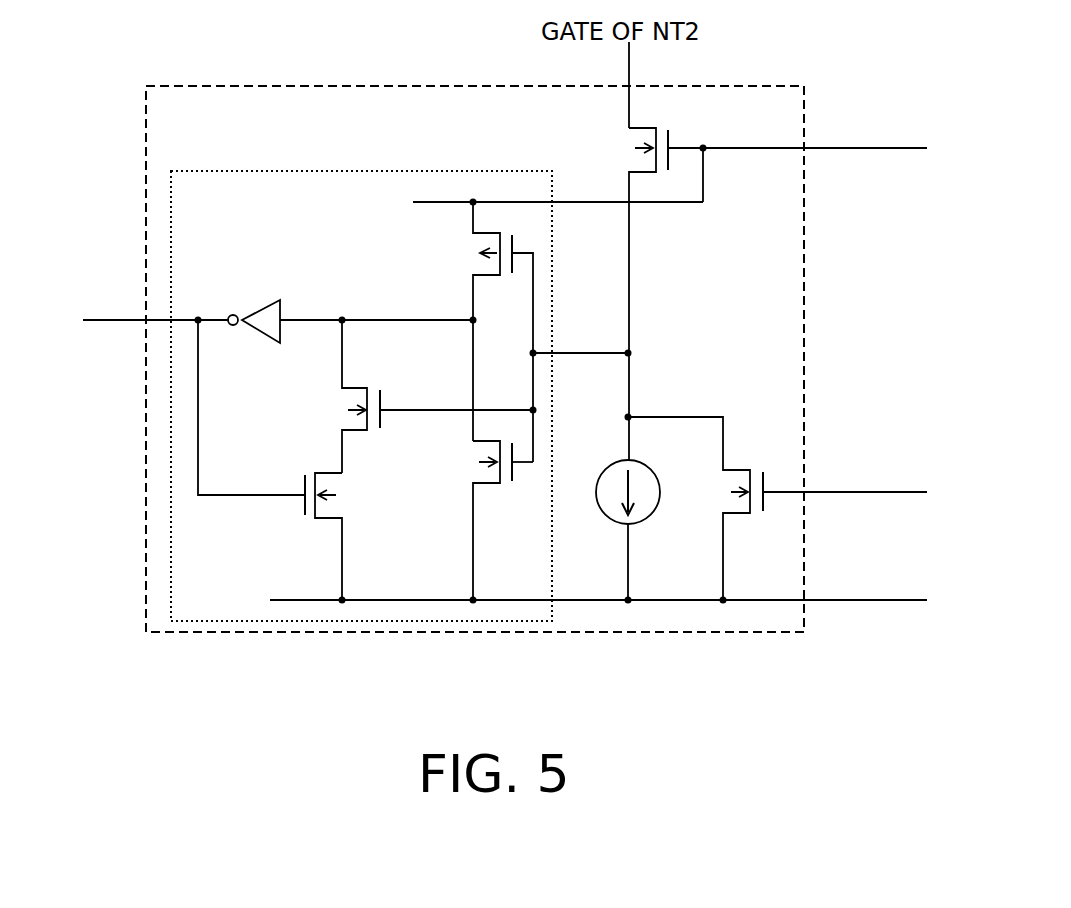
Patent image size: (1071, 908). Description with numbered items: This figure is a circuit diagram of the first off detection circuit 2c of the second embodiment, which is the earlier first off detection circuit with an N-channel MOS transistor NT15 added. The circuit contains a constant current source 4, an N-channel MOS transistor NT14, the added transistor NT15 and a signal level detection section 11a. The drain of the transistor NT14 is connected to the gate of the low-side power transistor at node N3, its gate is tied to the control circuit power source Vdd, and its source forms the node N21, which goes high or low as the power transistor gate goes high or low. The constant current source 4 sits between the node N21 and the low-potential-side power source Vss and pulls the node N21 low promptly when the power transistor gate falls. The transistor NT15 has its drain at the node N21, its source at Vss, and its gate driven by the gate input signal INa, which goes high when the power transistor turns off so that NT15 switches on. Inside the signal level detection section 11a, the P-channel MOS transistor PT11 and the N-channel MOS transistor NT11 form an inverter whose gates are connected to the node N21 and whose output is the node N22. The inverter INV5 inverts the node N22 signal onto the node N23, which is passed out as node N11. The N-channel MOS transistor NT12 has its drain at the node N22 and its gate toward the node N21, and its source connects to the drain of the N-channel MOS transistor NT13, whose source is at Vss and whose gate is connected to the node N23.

The first off detection circuit 2c is at (805, 303).
The signal level detection section 11a is at (258, 170).
The constant current source 4 is at (604, 470).
The inverter INV5 is at (281, 300).
The P-channel MOS transistor PT11 is at (480, 246).
The N-channel MOS transistor NT11 is at (478, 474).
The N-channel MOS transistor NT12 is at (355, 412).
The N-channel MOS transistor NT13 is at (300, 508).
The N-channel MOS transistor NT14 is at (633, 135).
The N-channel MOS transistor NT15 is at (725, 500).
The node N3 is at (651, 85).
The node N11 is at (140, 308).
The node N21 is at (608, 354).
The node N22 is at (378, 307).
The node N23 is at (242, 392).
The control circuit power source Vdd is at (871, 147).
The low-potential-side power source Vss is at (870, 598).
The gate input signal INa is at (877, 480).